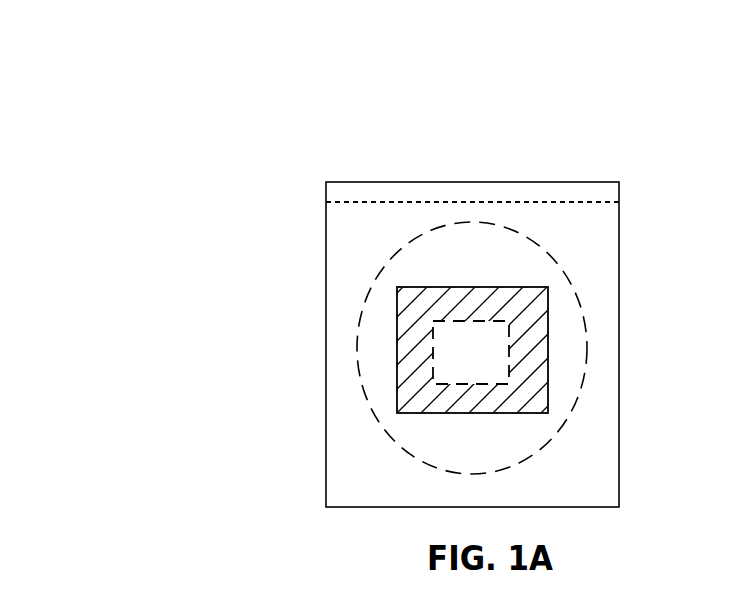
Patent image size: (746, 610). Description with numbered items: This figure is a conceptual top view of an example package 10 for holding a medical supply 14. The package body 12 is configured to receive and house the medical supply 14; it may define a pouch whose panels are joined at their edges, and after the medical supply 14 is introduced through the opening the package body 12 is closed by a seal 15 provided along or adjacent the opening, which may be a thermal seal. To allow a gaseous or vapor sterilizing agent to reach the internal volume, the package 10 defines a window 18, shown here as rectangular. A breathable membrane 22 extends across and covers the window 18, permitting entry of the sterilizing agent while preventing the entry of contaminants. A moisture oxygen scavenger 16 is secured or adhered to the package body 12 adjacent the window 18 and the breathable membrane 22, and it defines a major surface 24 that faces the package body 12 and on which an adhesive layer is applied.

The package 10 is at (137, 62).
The package body 12 is at (398, 181).
The medical supply 14 is at (360, 310).
The seal 15 is at (337, 202).
The moisture oxygen scavenger 16 is at (512, 285).
The window 18 is at (512, 340).
The breathable membrane 22 is at (503, 367).
The major surface 24 is at (530, 388).